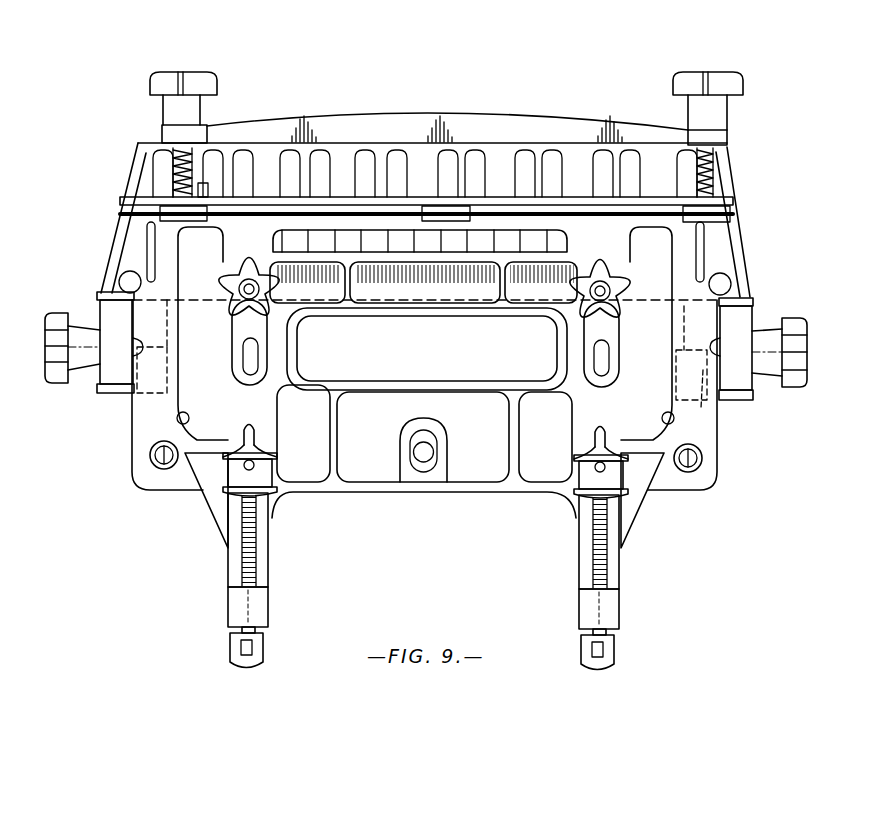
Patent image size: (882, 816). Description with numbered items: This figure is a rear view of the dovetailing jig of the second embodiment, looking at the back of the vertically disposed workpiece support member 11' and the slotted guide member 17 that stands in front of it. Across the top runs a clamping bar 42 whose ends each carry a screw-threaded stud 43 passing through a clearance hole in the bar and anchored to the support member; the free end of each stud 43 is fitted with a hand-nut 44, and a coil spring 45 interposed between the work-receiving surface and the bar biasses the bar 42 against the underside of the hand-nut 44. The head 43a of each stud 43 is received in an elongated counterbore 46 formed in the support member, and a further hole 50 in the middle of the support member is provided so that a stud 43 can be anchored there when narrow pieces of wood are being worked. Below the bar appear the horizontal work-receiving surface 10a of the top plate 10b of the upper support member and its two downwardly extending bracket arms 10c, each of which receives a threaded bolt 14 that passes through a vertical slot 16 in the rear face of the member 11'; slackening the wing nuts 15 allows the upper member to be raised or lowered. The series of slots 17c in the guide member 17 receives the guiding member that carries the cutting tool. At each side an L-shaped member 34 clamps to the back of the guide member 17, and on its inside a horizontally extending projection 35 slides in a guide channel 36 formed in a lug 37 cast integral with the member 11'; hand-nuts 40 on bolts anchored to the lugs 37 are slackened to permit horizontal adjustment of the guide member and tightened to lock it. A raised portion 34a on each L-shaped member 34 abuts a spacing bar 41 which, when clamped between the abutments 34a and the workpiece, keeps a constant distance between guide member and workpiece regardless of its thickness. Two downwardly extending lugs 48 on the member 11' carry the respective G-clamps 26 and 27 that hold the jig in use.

The work-receiving surface 10a is at (423, 197).
The top plate 10b is at (143, 200).
The bracket arms 10c is at (233, 327).
The workpiece support member 11' is at (424, 379).
The threaded bolts or studs 14 is at (270, 286).
The wing nuts 15 is at (235, 310).
The vertical slot 16 is at (250, 358).
The guide member 17 is at (130, 230).
The slots 17c is at (347, 165).
The G-clamp 26 is at (260, 567).
The G-clamp 27 is at (612, 572).
The L-shaped member 34 is at (107, 377).
The raised portion 34a is at (115, 293).
The projection 35 is at (138, 347).
The guide channel 36 is at (148, 349).
The lug 37 is at (429, 399).
The hand-nuts 40 is at (57, 357).
The spacing bar 41 is at (125, 298).
The clamping bar 42 is at (556, 120).
The screw-threaded stud 43 is at (713, 181).
The head of stud 43a is at (158, 460).
The hand-nuts 44 is at (218, 86).
The coil springs 45 is at (714, 168).
The elongated counterbore 46 is at (150, 435).
The downwardly extending lugs 48 is at (197, 498).
The hole 50 is at (425, 457).